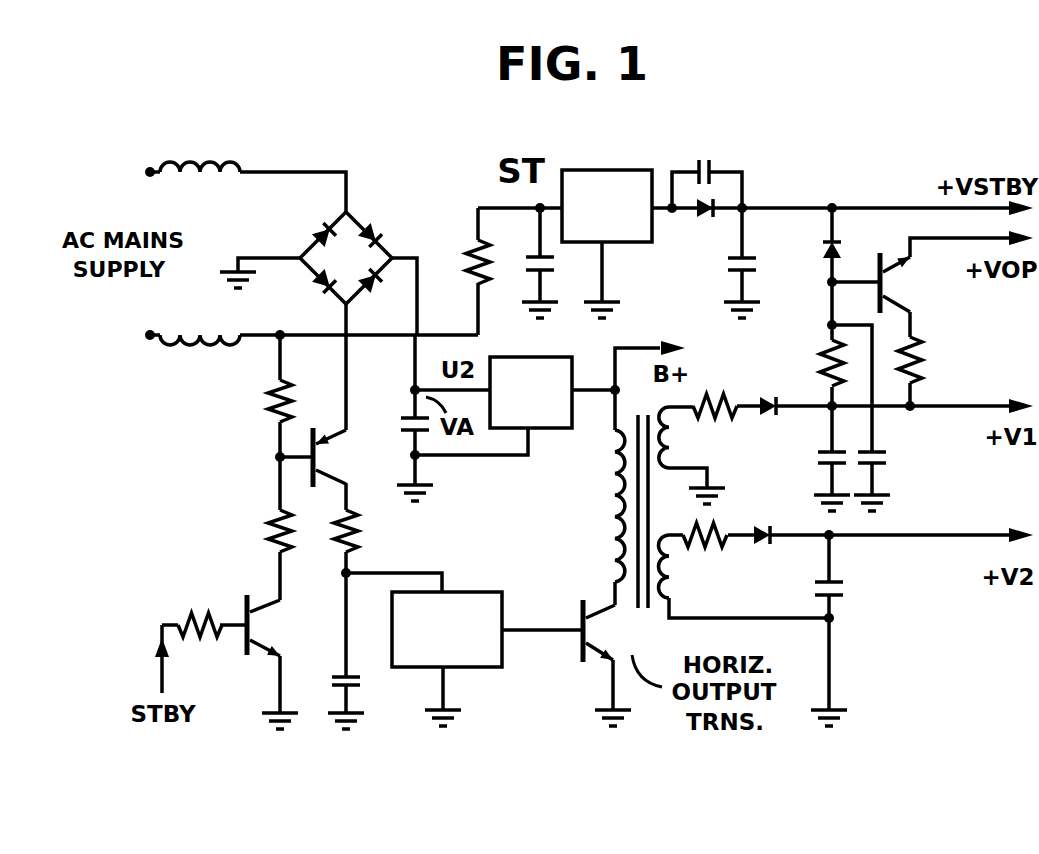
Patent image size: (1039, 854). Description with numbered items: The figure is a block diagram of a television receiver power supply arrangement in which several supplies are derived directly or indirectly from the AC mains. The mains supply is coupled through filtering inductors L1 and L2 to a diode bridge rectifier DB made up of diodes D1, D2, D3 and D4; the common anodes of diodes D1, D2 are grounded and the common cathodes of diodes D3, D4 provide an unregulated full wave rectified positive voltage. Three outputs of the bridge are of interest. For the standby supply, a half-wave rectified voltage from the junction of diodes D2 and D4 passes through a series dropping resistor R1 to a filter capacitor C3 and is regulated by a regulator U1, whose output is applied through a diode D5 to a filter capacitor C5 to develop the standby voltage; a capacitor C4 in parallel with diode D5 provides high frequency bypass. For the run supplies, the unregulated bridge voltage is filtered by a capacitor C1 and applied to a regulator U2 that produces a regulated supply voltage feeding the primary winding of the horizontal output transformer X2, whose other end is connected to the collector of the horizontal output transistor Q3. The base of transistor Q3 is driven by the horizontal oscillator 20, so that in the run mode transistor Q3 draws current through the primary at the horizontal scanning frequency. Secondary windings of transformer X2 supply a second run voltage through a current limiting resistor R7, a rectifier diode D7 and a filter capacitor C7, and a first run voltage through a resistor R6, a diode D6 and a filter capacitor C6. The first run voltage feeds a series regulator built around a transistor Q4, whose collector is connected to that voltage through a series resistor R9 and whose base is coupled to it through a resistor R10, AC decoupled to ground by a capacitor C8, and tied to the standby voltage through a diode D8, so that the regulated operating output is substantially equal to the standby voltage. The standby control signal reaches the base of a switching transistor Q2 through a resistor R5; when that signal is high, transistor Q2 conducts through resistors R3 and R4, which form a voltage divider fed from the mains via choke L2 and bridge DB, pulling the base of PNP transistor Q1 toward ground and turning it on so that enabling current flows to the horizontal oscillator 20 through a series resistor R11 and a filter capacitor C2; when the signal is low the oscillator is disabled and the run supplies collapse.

The horizontal oscillator 20 is at (516, 647).
The filtering inductor L1 is at (200, 185).
The filtering inductor L2 is at (200, 322).
The diode bridge rectifier DB is at (303, 241).
The diode D1 is at (311, 219).
The diode D2 is at (310, 297).
The diode D3 is at (383, 219).
The diode D4 is at (381, 297).
The diode D5 is at (701, 226).
The diode D6 is at (769, 422).
The rectifier diode D7 is at (768, 553).
The diode D8 is at (810, 250).
The series dropping resistor R1 is at (458, 263).
The resistor R3 is at (258, 401).
The resistor R4 is at (258, 531).
The resistor R5 is at (200, 609).
The resistor R6 is at (715, 422).
The current limiting resistor R7 is at (705, 551).
The series resistor R9 is at (930, 360).
The resistor R10 is at (802, 363).
The series resistor R11 is at (371, 531).
The capacitor C1 is at (394, 425).
The filter capacitor C2 is at (327, 684).
The filter capacitor C3 is at (557, 272).
The capacitor C4 is at (702, 156).
The filter capacitor C5 is at (721, 273).
The filter capacitor C6 is at (812, 470).
The filter capacitor C7 is at (843, 576).
The capacitor C8 is at (888, 470).
The PNP transistor Q1 is at (342, 457).
The switching transistor Q2 is at (282, 625).
The horizontal output transistor Q3 is at (614, 631).
The transistor Q4 is at (912, 283).
The regulator U1 is at (607, 229).
The regulator U2 is at (531, 392).
The horizontal output transformer X2 is at (584, 507).